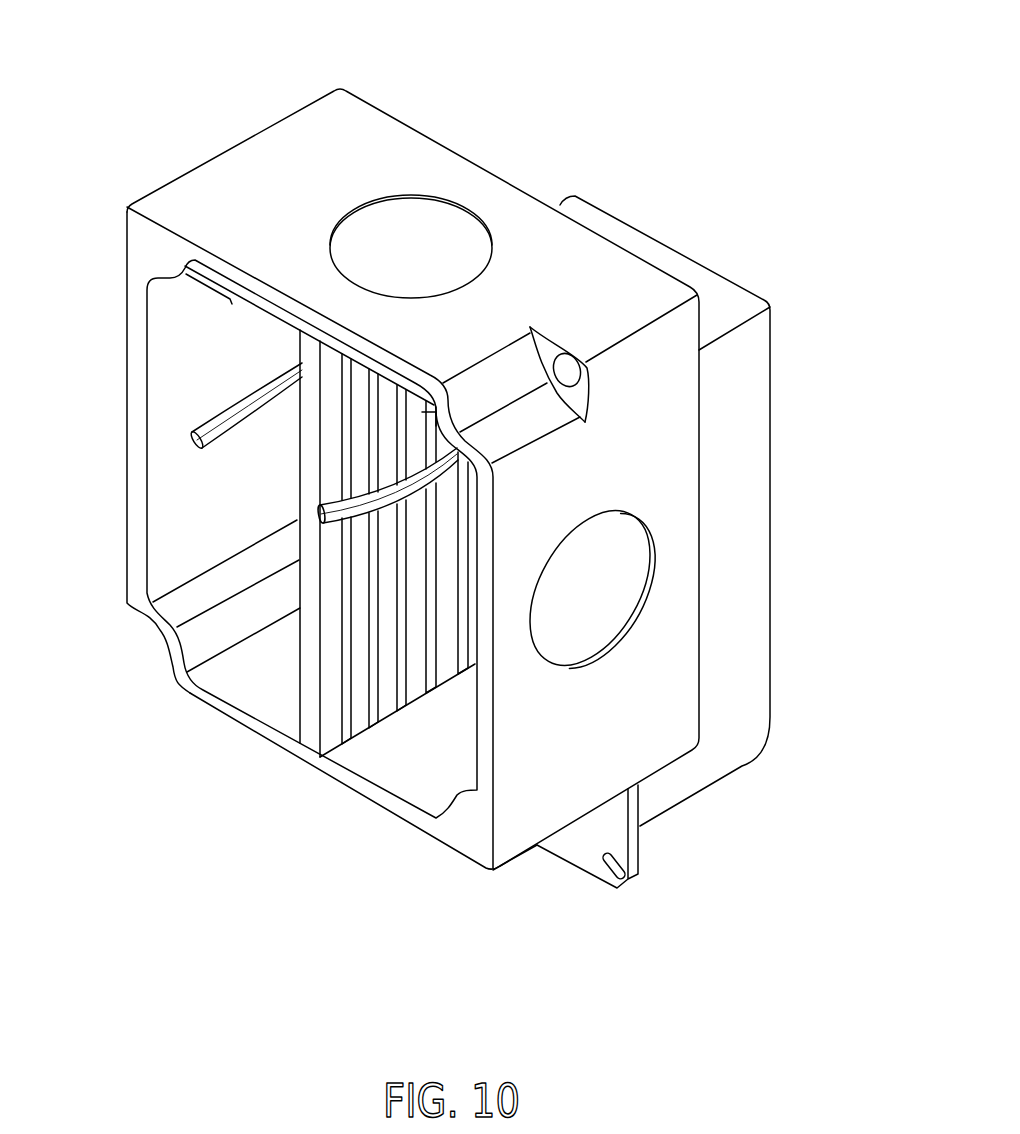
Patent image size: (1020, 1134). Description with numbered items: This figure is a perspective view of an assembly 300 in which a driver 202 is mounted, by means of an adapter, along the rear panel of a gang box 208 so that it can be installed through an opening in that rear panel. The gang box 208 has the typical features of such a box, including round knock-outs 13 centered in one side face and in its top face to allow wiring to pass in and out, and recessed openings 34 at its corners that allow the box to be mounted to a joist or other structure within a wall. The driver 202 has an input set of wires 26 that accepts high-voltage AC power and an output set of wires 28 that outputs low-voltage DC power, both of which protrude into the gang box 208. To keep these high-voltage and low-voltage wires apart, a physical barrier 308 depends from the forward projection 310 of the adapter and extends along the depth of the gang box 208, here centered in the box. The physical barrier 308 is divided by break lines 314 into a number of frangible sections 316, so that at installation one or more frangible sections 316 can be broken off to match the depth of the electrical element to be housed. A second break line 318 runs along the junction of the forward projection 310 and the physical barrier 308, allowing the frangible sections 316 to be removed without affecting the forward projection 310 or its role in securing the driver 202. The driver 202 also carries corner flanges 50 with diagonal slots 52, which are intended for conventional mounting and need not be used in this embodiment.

The assembly 300 is at (505, 94).
The gang box 208 is at (296, 132).
The driver 202 is at (778, 378).
The knock-outs 13 is at (408, 222).
The recessed openings 34 is at (569, 365).
The forward projection 310 is at (260, 310).
The second break line 318 is at (317, 350).
The physical barrier 308 is at (298, 712).
The frangible sections 316 is at (362, 640).
The break lines 314 is at (403, 692).
The input set of wires 26 is at (202, 409).
The output set of wires 28 is at (420, 504).
The corner flanges 50 is at (634, 847).
The diagonal slots 52 is at (625, 884).